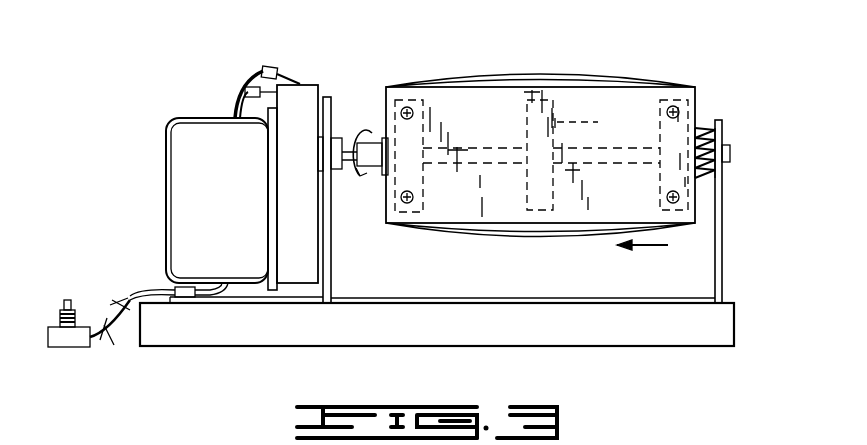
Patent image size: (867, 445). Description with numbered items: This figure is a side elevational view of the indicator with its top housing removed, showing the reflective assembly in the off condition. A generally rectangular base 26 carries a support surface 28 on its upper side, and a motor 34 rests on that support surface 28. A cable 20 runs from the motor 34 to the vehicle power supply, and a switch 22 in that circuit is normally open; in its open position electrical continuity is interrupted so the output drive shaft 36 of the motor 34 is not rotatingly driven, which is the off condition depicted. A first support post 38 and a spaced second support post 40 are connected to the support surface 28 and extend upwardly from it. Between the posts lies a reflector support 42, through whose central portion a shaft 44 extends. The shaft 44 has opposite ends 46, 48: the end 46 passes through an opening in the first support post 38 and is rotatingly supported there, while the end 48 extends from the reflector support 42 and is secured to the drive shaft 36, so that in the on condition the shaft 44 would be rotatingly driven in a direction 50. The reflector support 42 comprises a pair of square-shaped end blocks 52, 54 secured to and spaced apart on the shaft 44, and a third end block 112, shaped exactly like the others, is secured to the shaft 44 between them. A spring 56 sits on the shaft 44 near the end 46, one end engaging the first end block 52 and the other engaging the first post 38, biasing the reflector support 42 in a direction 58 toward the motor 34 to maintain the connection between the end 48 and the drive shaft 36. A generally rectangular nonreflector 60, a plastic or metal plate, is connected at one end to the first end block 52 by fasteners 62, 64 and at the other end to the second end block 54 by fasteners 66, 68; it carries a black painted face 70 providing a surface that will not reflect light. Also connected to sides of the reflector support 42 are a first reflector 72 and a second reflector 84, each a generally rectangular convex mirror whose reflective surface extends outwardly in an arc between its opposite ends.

The cable 20 is at (147, 290).
The switch 22 is at (78, 333).
The base 26 is at (610, 333).
The support surface 28 is at (672, 304).
The motor 34 is at (207, 142).
The output drive shaft 36 is at (354, 150).
The first support post 38 is at (722, 215).
The second support post 40 is at (332, 262).
The reflector support 42 is at (487, 163).
The shaft 44 is at (472, 147).
The end of the shaft 46 is at (730, 148).
The end of the shaft 48 is at (372, 146).
The direction 50 is at (367, 180).
The first end block 52 is at (655, 110).
The second end block 54 is at (423, 110).
The spring 56 is at (712, 130).
The direction 58 is at (645, 257).
The nonreflector 60 is at (578, 97).
The fastener 62 is at (673, 106).
The fastener 64 is at (673, 203).
The fastener 66 is at (407, 107).
The fastener 68 is at (407, 203).
The black face 70 is at (573, 207).
The first reflector 72 is at (544, 73).
The second reflector 84 is at (518, 238).
The third end block 112 is at (593, 122).